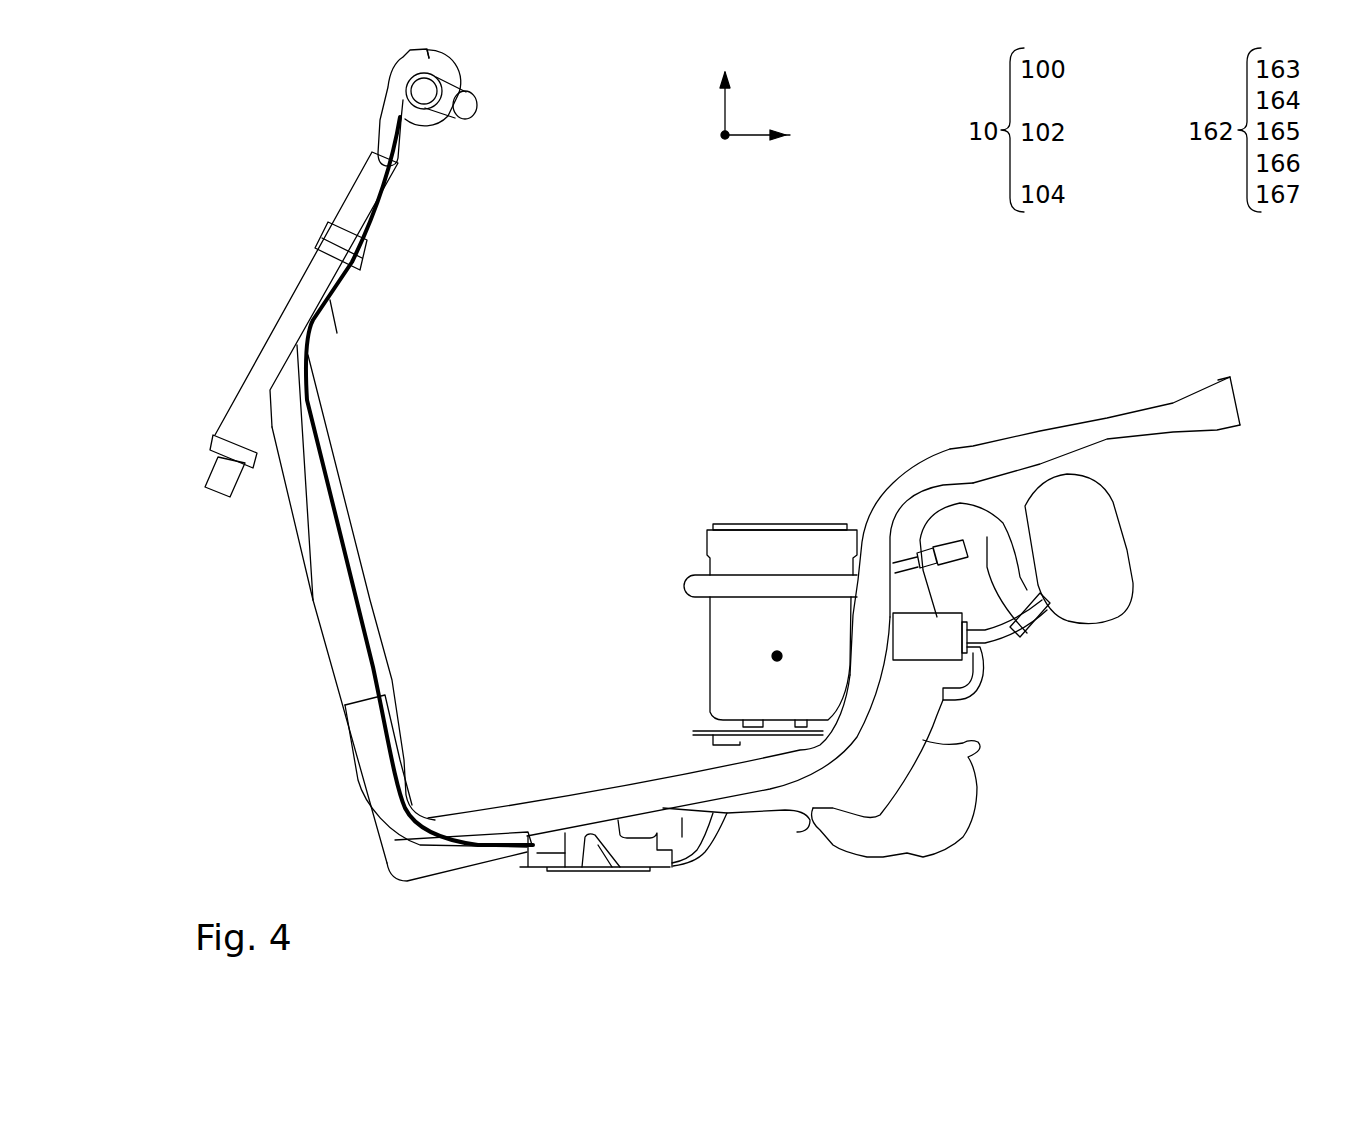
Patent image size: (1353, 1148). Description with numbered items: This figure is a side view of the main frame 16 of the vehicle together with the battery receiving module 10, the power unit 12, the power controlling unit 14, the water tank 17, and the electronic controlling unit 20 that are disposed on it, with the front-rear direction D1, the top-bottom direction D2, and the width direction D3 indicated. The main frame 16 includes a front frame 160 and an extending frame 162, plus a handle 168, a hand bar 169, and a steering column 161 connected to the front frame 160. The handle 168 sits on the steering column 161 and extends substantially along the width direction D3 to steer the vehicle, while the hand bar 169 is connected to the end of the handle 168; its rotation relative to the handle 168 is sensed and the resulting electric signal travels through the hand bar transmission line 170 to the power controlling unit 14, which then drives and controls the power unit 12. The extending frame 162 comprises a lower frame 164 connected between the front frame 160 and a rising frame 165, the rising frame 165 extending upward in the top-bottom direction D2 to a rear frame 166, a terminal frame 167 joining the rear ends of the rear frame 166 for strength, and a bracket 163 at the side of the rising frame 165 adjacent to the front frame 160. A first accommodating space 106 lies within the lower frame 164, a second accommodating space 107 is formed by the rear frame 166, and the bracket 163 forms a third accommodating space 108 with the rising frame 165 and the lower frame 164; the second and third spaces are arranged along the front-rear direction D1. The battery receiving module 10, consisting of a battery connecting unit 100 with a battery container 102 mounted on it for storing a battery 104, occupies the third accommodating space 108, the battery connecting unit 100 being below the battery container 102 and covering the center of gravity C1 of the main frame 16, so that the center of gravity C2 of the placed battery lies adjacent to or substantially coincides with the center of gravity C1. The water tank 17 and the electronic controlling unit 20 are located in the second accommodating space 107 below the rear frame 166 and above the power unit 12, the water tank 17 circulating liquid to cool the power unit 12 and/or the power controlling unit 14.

The battery receiving module 10 is at (702, 682).
The battery connecting unit 100 is at (787, 732).
The battery container 102 is at (730, 663).
The battery 104 is at (727, 527).
The first accommodating space 106 is at (528, 787).
The second accommodating space 107 is at (1180, 540).
The third accommodating space 108 is at (695, 640).
The power unit 12 is at (950, 795).
The power controlling unit 14 is at (577, 853).
The main frame 16 is at (326, 269).
The front frame 160 is at (310, 518).
The steering column 161 is at (272, 362).
The extending frame 162 is at (834, 622).
The bracket 163 is at (855, 575).
The lower frame 164 is at (550, 817).
The rising frame 165 is at (883, 567).
The rear frame 166 is at (1003, 453).
The terminal frame 167 is at (1218, 400).
The handle 168 is at (407, 58).
The hand bar 169 is at (455, 77).
The water tank 17 is at (1093, 553).
The hand bar transmission line 170 is at (370, 662).
The electronic controlling unit 20 is at (993, 600).
The center of gravity of the main frame C1 is at (777, 656).
The center of gravity of the battery C2 is at (777, 656).
The front-rear direction D1 is at (760, 137).
The top-bottom direction D2 is at (727, 103).
The width direction D3 is at (727, 128).